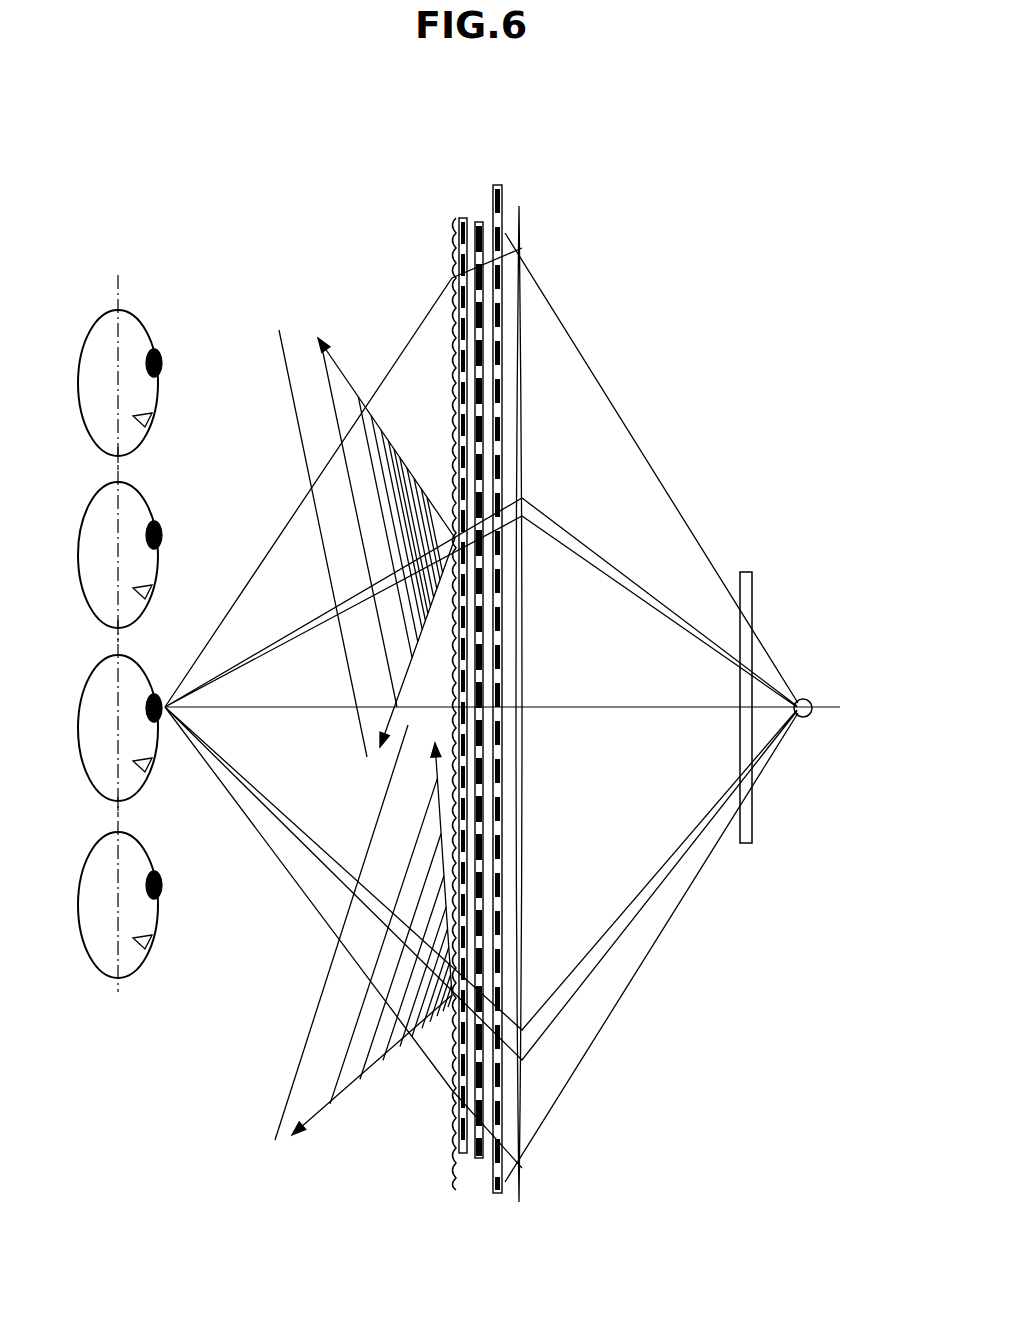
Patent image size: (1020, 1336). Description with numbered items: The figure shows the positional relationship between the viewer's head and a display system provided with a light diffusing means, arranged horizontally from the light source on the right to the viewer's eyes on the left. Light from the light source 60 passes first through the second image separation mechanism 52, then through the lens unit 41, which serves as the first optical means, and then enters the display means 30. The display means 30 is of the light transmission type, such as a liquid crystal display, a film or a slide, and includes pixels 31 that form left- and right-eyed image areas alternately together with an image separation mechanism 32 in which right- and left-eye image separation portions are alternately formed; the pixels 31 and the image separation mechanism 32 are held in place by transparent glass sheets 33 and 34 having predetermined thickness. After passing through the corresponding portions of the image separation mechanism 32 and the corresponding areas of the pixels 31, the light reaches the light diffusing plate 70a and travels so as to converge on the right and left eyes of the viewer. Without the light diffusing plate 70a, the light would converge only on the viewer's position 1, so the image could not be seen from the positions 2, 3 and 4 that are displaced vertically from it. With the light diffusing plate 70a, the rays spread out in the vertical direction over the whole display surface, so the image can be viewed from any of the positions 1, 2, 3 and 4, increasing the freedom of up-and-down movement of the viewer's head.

The viewer's position 1 is at (120, 717).
The viewer's position 2 is at (120, 544).
The viewer's position 3 is at (120, 894).
The viewer's position 4 is at (120, 372).
The display means 30 is at (488, 696).
The pixels 31 is at (478, 222).
The image separation mechanism 32 is at (497, 183).
The transparent glass sheet 33 is at (470, 1152).
The transparent glass sheet 34 is at (490, 1152).
The lens unit 41 is at (526, 845).
The second image separation mechanism 52 is at (753, 580).
The light source 60 is at (808, 716).
The light diffusing plate 70a is at (452, 240).